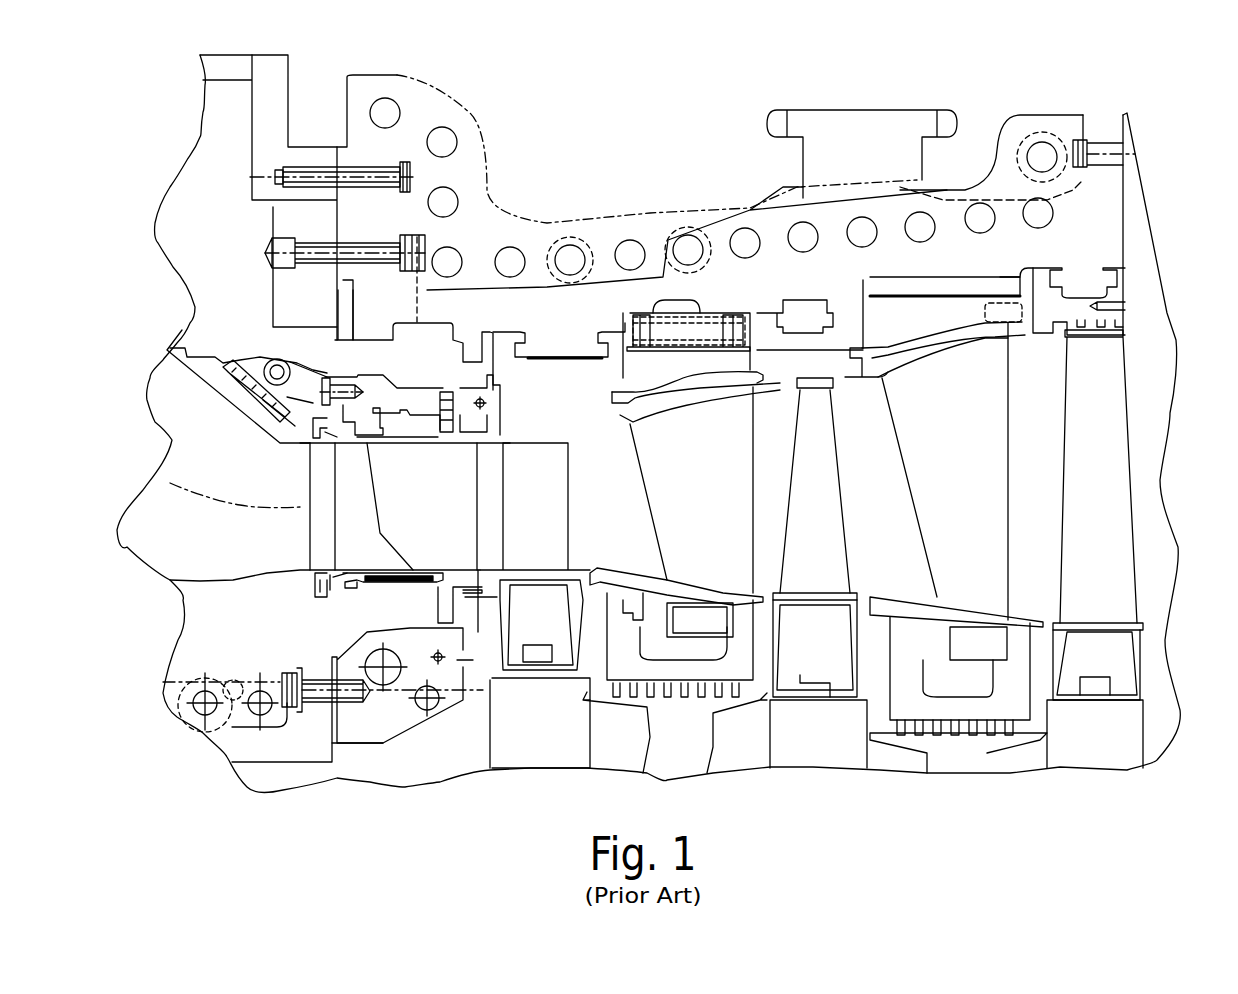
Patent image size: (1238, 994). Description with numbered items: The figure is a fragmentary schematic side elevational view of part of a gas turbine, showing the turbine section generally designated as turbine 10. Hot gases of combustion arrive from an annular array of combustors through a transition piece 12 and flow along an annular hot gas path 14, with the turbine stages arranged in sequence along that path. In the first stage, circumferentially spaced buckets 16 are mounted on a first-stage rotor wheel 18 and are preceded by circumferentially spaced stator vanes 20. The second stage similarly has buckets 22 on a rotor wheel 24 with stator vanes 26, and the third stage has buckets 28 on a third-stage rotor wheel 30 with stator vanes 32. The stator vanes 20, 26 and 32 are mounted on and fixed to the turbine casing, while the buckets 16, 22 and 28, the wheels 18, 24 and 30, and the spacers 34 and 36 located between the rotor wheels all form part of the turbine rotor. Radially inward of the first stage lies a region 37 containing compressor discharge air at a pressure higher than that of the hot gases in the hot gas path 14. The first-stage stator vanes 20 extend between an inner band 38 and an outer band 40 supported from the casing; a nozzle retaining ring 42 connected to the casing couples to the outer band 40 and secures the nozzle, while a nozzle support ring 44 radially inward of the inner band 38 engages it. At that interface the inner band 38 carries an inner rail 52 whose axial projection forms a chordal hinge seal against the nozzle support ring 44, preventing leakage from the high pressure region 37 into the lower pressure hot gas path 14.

The turbine 10 is at (566, 145).
The transition piece 12 is at (185, 430).
The hot gas path 14 is at (600, 443).
The buckets 16 is at (560, 473).
The first-stage rotor wheel 18 is at (517, 750).
The stator vanes 20 is at (387, 477).
The buckets 22 is at (837, 483).
The rotor wheel 24 is at (817, 755).
The stator vanes 26 is at (687, 461).
The buckets 28 is at (1123, 475).
The third-stage rotor wheel 30 is at (1100, 760).
The stator vanes 32 is at (950, 455).
The spacer 34 is at (680, 755).
The spacer 36 is at (960, 760).
The region 37 is at (275, 642).
The inner band 38 is at (413, 570).
The outer band 40 is at (433, 443).
The nozzle retaining ring 42 is at (370, 387).
The nozzle support ring 44 is at (467, 618).
The inner rail 52 is at (438, 587).